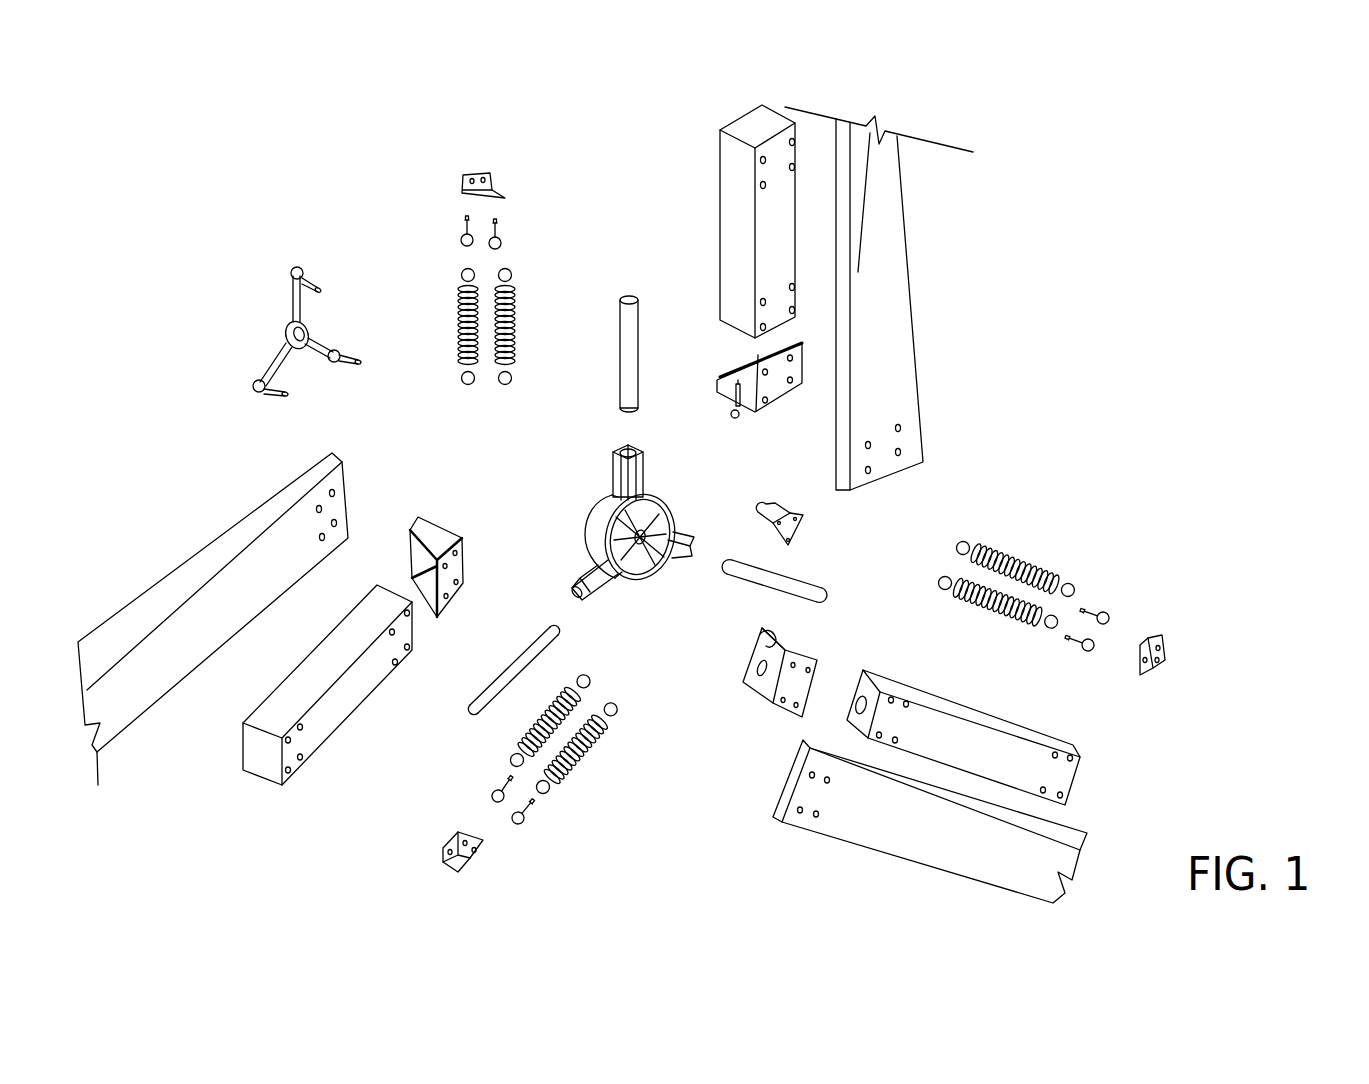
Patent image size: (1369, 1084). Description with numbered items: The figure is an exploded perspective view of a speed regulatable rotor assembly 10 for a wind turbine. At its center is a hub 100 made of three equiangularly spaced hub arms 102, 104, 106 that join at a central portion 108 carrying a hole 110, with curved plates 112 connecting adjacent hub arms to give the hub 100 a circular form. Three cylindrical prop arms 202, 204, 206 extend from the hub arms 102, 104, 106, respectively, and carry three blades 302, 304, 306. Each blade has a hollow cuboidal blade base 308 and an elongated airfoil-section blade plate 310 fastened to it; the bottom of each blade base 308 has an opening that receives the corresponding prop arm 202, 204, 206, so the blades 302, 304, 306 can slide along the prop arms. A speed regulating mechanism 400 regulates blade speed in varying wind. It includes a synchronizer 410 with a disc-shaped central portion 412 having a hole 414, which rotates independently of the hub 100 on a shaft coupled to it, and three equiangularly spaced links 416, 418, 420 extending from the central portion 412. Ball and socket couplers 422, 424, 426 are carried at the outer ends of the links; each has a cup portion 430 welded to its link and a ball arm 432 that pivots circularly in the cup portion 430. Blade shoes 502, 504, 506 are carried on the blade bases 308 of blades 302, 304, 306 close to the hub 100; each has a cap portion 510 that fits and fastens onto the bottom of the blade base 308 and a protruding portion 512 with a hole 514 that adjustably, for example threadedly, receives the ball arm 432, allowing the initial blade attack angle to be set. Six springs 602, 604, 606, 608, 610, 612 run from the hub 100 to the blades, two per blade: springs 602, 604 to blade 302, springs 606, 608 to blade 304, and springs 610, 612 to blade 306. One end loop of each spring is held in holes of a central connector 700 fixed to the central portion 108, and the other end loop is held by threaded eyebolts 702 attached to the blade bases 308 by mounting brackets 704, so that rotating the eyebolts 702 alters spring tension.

The rotor assembly 10 is at (1240, 174).
The hub 100 is at (598, 512).
The hub arm 102 is at (640, 476).
The hub arm 104 is at (598, 590).
The hub arm 106 is at (680, 560).
The central portion 108 is at (640, 547).
The hole 110 is at (642, 528).
The curved plates 112 is at (597, 528).
The prop arm 202 is at (620, 348).
The prop arm 204 is at (500, 670).
The prop arm 206 is at (810, 590).
The blade 302 is at (710, 180).
The blade 304 is at (196, 540).
The blade 306 is at (1095, 741).
The blade base 308 is at (728, 234).
The blade plate 310 is at (897, 348).
The speed regulating mechanism 400 is at (388, 180).
The synchronizer 410 is at (258, 318).
The central portion 412 is at (300, 348).
The hole 414 is at (312, 333).
The link 416 is at (293, 298).
The link 418 is at (272, 355).
The link 420 is at (338, 350).
The ball and socket coupler 422 is at (303, 278).
The ball and socket coupler 424 is at (260, 392).
The ball and socket coupler 426 is at (350, 364).
The cup portion 430 is at (294, 268).
The ball arm 432 is at (322, 290).
The blade shoe 502 is at (725, 368).
The blade shoe 504 is at (418, 507).
The blade shoe 506 is at (748, 698).
The cap portion 510 is at (780, 388).
The protruding portion 512 is at (732, 412).
The hole 514 is at (740, 418).
The spring 602 is at (510, 385).
The spring 604 is at (470, 385).
The spring 606 is at (540, 720).
The spring 608 is at (588, 752).
The spring 610 is at (988, 605).
The spring 612 is at (1015, 562).
The central connector 700 is at (800, 530).
The threaded eyebolt 702 is at (497, 222).
The mounting bracket 704 is at (492, 185).